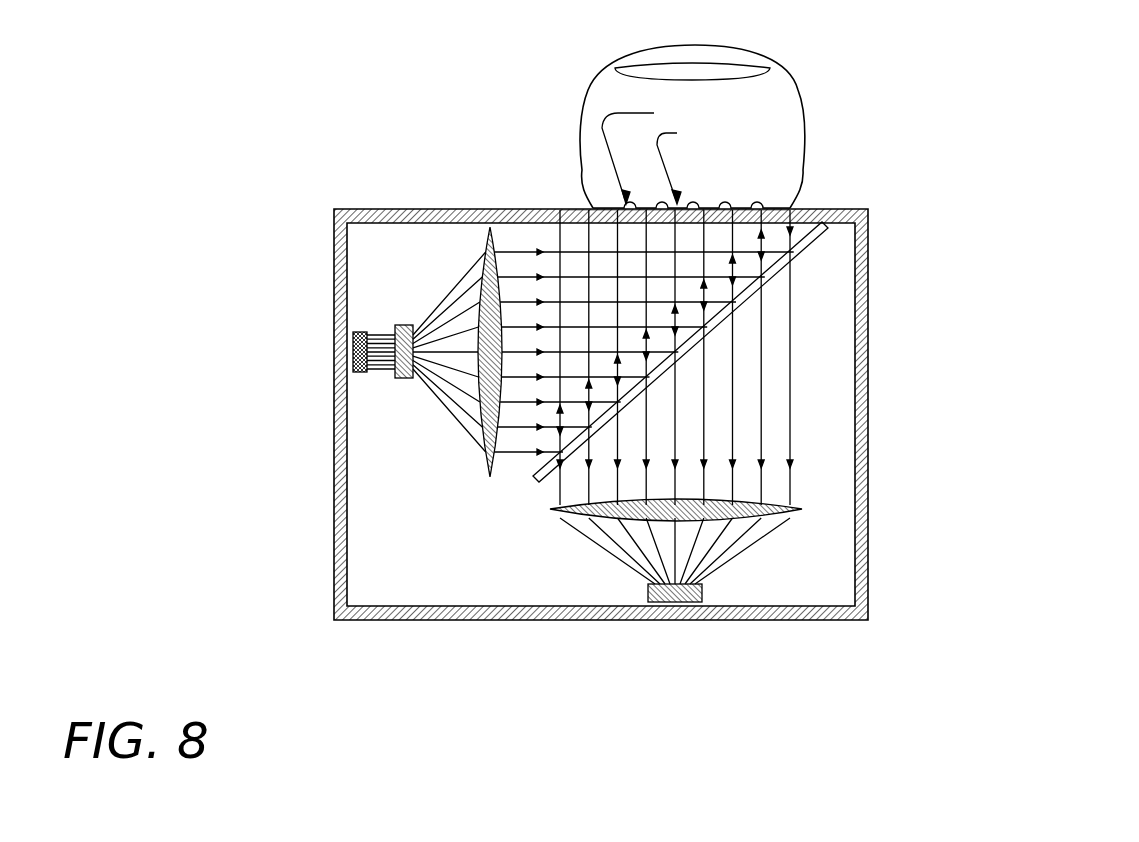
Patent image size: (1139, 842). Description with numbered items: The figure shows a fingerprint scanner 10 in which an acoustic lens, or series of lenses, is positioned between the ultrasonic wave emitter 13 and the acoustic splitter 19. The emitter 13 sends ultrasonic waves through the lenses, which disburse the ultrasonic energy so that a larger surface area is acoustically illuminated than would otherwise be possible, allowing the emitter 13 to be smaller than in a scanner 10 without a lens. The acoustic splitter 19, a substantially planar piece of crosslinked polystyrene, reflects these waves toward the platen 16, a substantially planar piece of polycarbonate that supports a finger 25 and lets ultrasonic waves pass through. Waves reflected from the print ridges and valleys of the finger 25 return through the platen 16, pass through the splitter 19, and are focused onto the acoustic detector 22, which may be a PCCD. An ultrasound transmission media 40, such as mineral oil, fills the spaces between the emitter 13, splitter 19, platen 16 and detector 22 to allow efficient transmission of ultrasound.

The fingerprint scanner 10 is at (955, 381).
The ultrasonic wave emitter 13 is at (361, 332).
The platen 16 is at (519, 209).
The acoustic splitter 19 is at (802, 246).
The acoustic detector 22 is at (706, 595).
The finger 25 is at (802, 100).
The ultrasound transmission media 40 is at (406, 568).